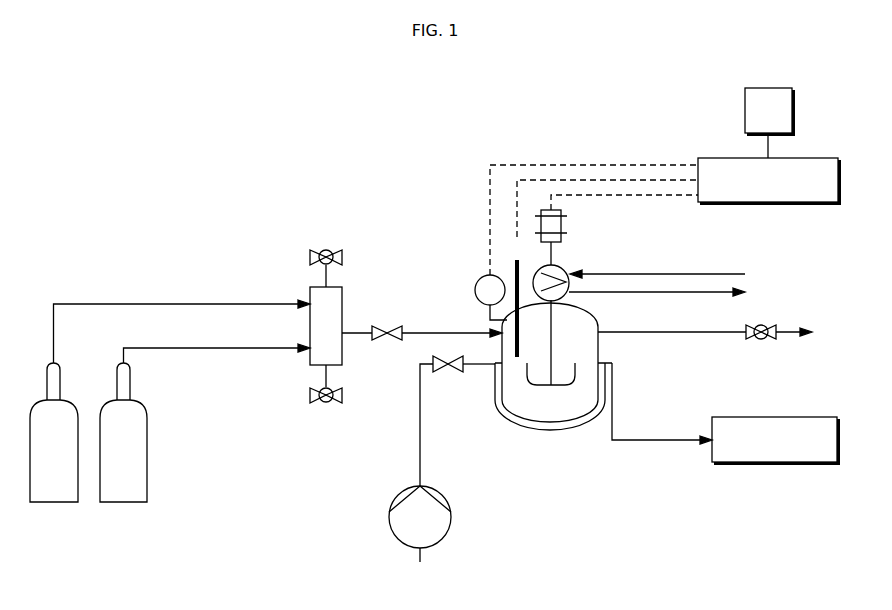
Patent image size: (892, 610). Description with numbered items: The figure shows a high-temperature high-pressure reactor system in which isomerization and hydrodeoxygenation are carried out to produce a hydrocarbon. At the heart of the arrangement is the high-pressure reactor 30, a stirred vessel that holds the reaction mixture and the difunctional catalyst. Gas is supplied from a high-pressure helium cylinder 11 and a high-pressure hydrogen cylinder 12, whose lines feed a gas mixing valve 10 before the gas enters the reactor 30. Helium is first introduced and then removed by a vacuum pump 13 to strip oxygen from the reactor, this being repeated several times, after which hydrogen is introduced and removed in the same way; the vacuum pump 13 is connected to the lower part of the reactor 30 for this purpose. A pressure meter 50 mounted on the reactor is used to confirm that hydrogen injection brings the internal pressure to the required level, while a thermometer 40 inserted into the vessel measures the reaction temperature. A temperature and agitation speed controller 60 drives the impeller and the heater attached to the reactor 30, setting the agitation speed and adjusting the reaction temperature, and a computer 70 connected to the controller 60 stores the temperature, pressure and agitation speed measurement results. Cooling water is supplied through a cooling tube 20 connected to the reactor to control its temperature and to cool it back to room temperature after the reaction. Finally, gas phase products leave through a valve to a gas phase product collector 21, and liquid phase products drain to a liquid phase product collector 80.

The gas mixing valve 10 is at (422, 318).
The high-pressure helium cylinder 11 is at (170, 420).
The high-pressure hydrogen cylinder 12 is at (205, 442).
The vacuum pump 13 is at (442, 475).
The cooling tube 20 is at (661, 256).
The gas phase product collector 21 is at (724, 334).
The high-pressure reactor 30 is at (553, 382).
The thermometer 40 is at (599, 268).
The pressure meter 50 is at (568, 242).
The temperature and agitation speed controller 60 is at (696, 184).
The computer for storing temperature/pressure/agitation speed measurement results 70 is at (770, 123).
The liquid phase product collector 80 is at (726, 414).